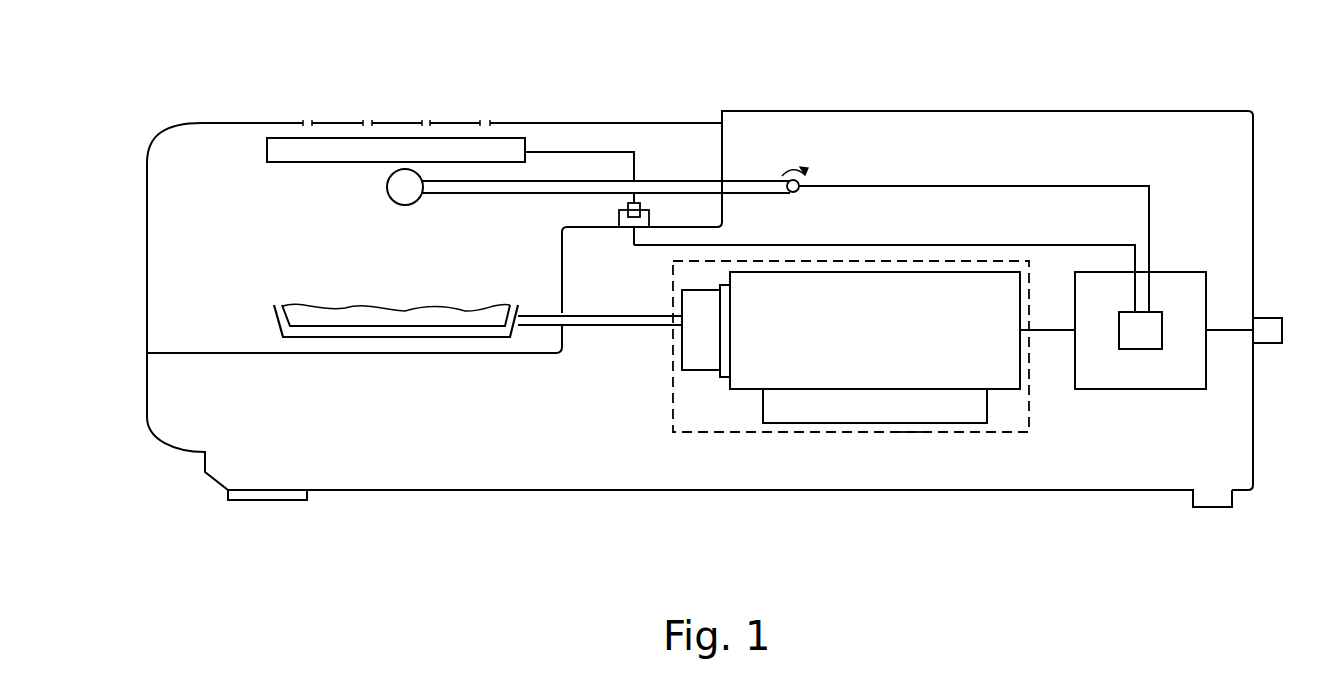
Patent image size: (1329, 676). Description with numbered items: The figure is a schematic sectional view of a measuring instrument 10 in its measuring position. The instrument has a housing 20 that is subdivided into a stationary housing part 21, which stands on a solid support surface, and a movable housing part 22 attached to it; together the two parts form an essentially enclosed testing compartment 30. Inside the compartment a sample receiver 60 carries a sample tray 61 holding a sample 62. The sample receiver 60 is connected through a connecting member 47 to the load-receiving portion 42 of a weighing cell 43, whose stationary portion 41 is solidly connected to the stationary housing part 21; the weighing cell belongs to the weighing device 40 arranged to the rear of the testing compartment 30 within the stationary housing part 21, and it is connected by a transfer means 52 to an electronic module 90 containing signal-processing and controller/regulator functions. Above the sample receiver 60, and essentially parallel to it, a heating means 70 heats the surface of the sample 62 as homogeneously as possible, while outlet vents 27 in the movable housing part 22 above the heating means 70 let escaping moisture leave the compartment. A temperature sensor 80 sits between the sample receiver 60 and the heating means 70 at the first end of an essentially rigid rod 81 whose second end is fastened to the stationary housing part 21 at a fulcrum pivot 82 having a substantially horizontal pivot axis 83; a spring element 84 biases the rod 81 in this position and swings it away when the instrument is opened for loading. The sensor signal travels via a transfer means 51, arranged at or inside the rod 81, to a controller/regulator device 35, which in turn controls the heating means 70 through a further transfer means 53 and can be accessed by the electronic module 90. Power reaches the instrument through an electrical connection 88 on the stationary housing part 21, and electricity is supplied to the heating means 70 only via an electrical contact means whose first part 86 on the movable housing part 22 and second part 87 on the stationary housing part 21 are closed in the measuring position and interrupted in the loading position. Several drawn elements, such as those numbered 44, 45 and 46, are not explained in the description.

The measuring instrument 10 is at (1194, 65).
The housing 20 is at (147, 323).
The stationary housing part 21 is at (463, 491).
The movable housing part 22 is at (250, 122).
The outlet vents 27 is at (305, 121).
The testing compartment 30 is at (175, 217).
The controller/regulator device 35 is at (1153, 312).
The weighing device 40 is at (681, 422).
The stationary portion 41 is at (913, 421).
The load-receiving portion 42 is at (712, 357).
The weighing cell 43 is at (875, 330).
The drive control 44 is at (790, 402).
The shaft 45 is at (610, 327).
The connection line 46 is at (565, 313).
The connecting member 47 is at (565, 338).
The transfer means 51 is at (917, 187).
The transfer means 52 is at (1040, 331).
The transfer means 53 is at (987, 245).
The sample receiver 60 is at (287, 338).
The sample tray 61 is at (330, 328).
The sample 62 is at (413, 328).
The heating means 70 is at (392, 136).
The temperature sensor 80 is at (388, 182).
The rod 81 is at (563, 172).
The fulcrum pivot 82 is at (800, 168).
The pivot axis 83 is at (799, 190).
The spring element 84 is at (795, 178).
The first part of electrical contact means 86 is at (641, 205).
The second part of electrical contact means 87 is at (650, 218).
The electrical connection 88 is at (1266, 318).
The electronic module 90 is at (1170, 390).